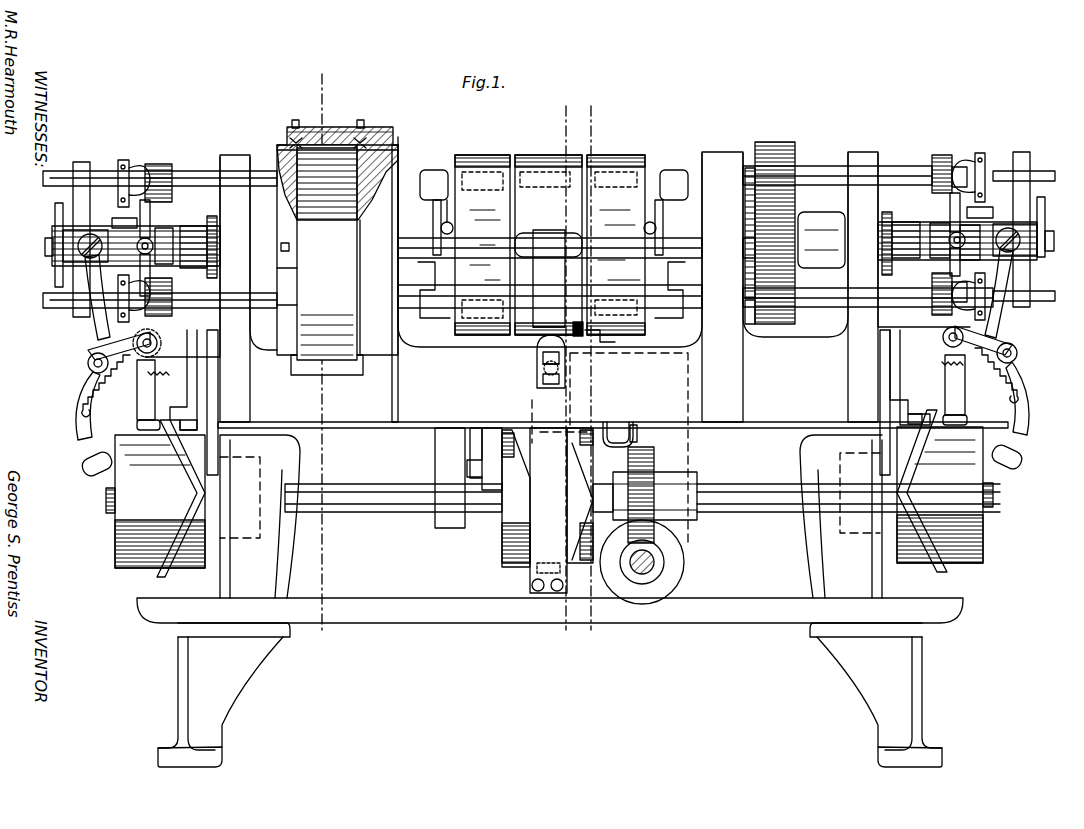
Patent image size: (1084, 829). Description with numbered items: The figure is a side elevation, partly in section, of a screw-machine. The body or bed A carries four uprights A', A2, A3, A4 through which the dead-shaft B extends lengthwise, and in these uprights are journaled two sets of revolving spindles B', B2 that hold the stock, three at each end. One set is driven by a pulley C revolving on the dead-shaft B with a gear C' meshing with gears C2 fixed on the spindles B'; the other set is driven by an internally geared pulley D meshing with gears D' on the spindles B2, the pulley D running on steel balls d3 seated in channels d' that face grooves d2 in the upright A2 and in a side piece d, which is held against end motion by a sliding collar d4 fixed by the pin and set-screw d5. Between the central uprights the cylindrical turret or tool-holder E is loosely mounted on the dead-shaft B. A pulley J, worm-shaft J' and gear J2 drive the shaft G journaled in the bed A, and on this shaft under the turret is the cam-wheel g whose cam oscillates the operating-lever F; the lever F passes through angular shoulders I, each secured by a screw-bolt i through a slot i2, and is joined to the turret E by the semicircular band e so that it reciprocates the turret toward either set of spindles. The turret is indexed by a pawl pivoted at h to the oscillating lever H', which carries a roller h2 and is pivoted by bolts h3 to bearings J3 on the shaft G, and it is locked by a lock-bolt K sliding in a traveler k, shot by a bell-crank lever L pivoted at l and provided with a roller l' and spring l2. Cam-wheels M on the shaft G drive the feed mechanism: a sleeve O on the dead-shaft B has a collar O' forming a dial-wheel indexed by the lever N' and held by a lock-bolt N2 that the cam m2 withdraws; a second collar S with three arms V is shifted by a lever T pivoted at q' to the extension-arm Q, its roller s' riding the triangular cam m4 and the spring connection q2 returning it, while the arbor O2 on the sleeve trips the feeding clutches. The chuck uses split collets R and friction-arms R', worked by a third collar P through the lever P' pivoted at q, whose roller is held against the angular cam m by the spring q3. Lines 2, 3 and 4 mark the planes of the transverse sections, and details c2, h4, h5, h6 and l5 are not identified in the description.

The body or bed A is at (572, 452).
The upright A2 is at (395, 140).
The upright A3 is at (866, 160).
The upright A4 is at (232, 165).
The upright A' is at (722, 271).
The dead-shaft B is at (563, 236).
The revolving spindles B' is at (899, 229).
The revolving spindles B2 is at (182, 170).
The pulley C is at (821, 229).
The gear C' is at (736, 233).
The gears C2 is at (775, 145).
The collar c2 is at (752, 326).
The pulley D is at (337, 230).
The gears D' is at (337, 152).
The side piece d is at (287, 257).
The circular channels d' is at (324, 120).
The grooves d2 is at (277, 150).
The steel balls d3 is at (288, 140).
The sliding collar d4 is at (280, 300).
The pin and set-screw d5 is at (290, 242).
The turret or tool-holder E is at (475, 175).
The semicircular band or shell e is at (536, 338).
The operating-lever F is at (561, 411).
The shaft G is at (395, 512).
The drum or cam-wheel g is at (508, 570).
The oscillating lever H' is at (471, 438).
The pivot h is at (553, 245).
The roller h2 is at (240, 458).
The bolts h3 is at (478, 490).
The stop h4 is at (137, 425).
The block h5 is at (170, 232).
The arm h6 is at (115, 222).
The angular shoulders I is at (536, 380).
The screw-bolt i is at (563, 372).
The vertically-extending slot i2 is at (535, 356).
The pulley J is at (655, 562).
The worm-shaft J' is at (634, 619).
The gear J2 is at (655, 455).
The bearings J3 is at (450, 478).
The lock-bolt K is at (578, 338).
The traveler k is at (600, 340).
The bell-crank lever L is at (610, 440).
The pivot l is at (582, 224).
The roller l' is at (544, 230).
The spring l2 is at (637, 437).
The roller l5 is at (548, 245).
The cam-wheels M is at (549, 497).
The angular cam m is at (180, 520).
The cam m2 is at (554, 410).
The triangular-shaped cam m4 is at (115, 480).
The oscillating lever N' is at (548, 402).
The lock-bolt N2 is at (552, 380).
The sleeve O is at (548, 259).
The collar O' is at (580, 235).
The small arbor O2 is at (58, 210).
The collar P is at (551, 244).
The oscillating lever P' is at (552, 387).
The extension-arm Q is at (550, 341).
The pivot q is at (559, 338).
The pivot q' is at (548, 371).
The spring connection q2 is at (120, 386).
The spring q3 is at (566, 375).
The split collets R is at (556, 219).
The friction-arms R' is at (551, 222).
The collar S is at (48, 247).
The roller s' is at (554, 469).
The lever T is at (92, 348).
The arms V is at (80, 162).
The section line 2 is at (322, 351).
The section line 3 is at (566, 367).
The section line 4 is at (591, 367).